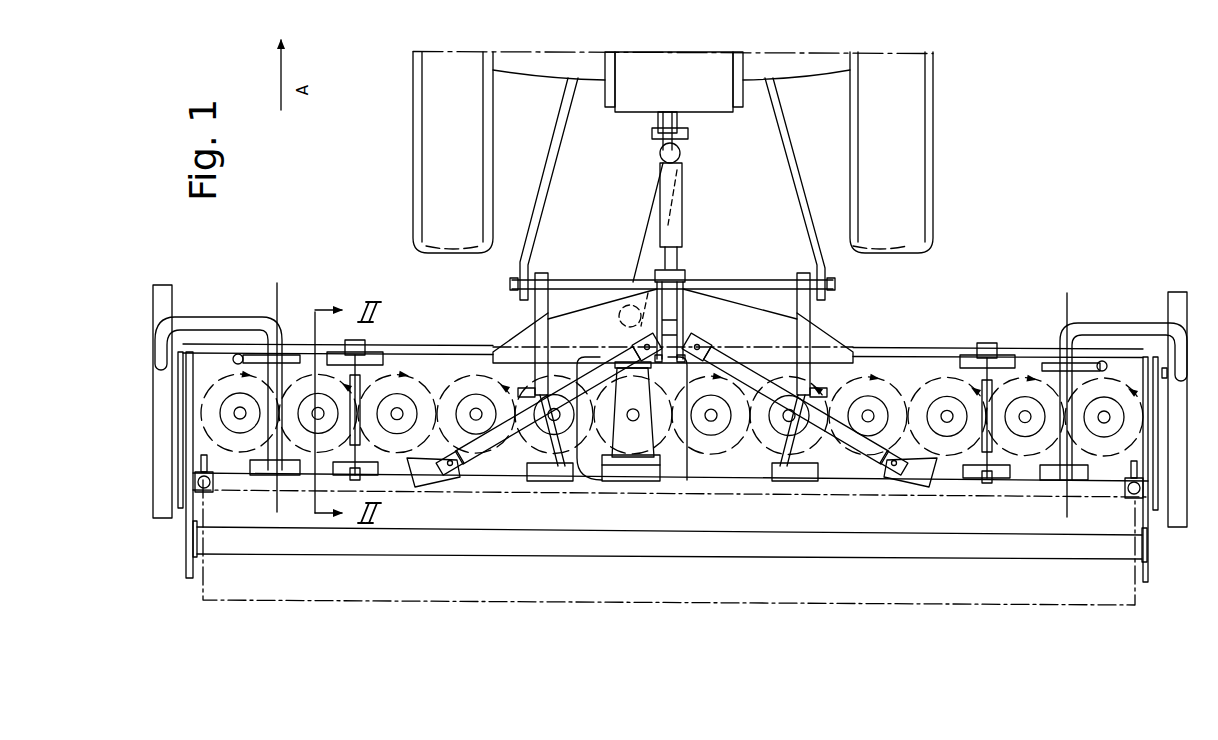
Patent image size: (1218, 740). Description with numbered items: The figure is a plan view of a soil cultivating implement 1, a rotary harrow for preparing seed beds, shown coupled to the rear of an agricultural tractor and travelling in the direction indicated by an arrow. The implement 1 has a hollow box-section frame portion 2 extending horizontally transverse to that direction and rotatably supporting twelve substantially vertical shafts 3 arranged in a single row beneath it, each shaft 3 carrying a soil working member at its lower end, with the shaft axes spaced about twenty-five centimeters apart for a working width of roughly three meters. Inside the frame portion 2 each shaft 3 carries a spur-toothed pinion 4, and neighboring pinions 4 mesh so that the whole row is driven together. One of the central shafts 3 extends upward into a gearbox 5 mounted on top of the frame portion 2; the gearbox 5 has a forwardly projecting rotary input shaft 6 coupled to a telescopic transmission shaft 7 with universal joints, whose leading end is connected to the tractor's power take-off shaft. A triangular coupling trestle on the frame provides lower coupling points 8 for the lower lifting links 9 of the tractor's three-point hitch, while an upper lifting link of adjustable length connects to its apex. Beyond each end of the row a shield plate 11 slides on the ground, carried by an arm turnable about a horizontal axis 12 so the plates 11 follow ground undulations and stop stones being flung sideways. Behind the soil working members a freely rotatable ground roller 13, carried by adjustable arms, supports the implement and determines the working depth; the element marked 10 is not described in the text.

The soil cultivating implement 1 is at (1021, 338).
The hollow box-section frame portion 2 is at (938, 363).
The shaft 3 is at (238, 430).
The pinion 4 is at (435, 380).
The gearbox 5 is at (633, 445).
The rotary input shaft 6 is at (558, 143).
The telescopic transmission shaft 7 is at (793, 150).
The lower coupling points 8 is at (512, 285).
The lower lifting links 9 is at (612, 328).
The carrier arm 10 is at (710, 437).
The shield plate 11 is at (158, 438).
The axis 12 is at (278, 292).
The ground roller 13 is at (682, 607).